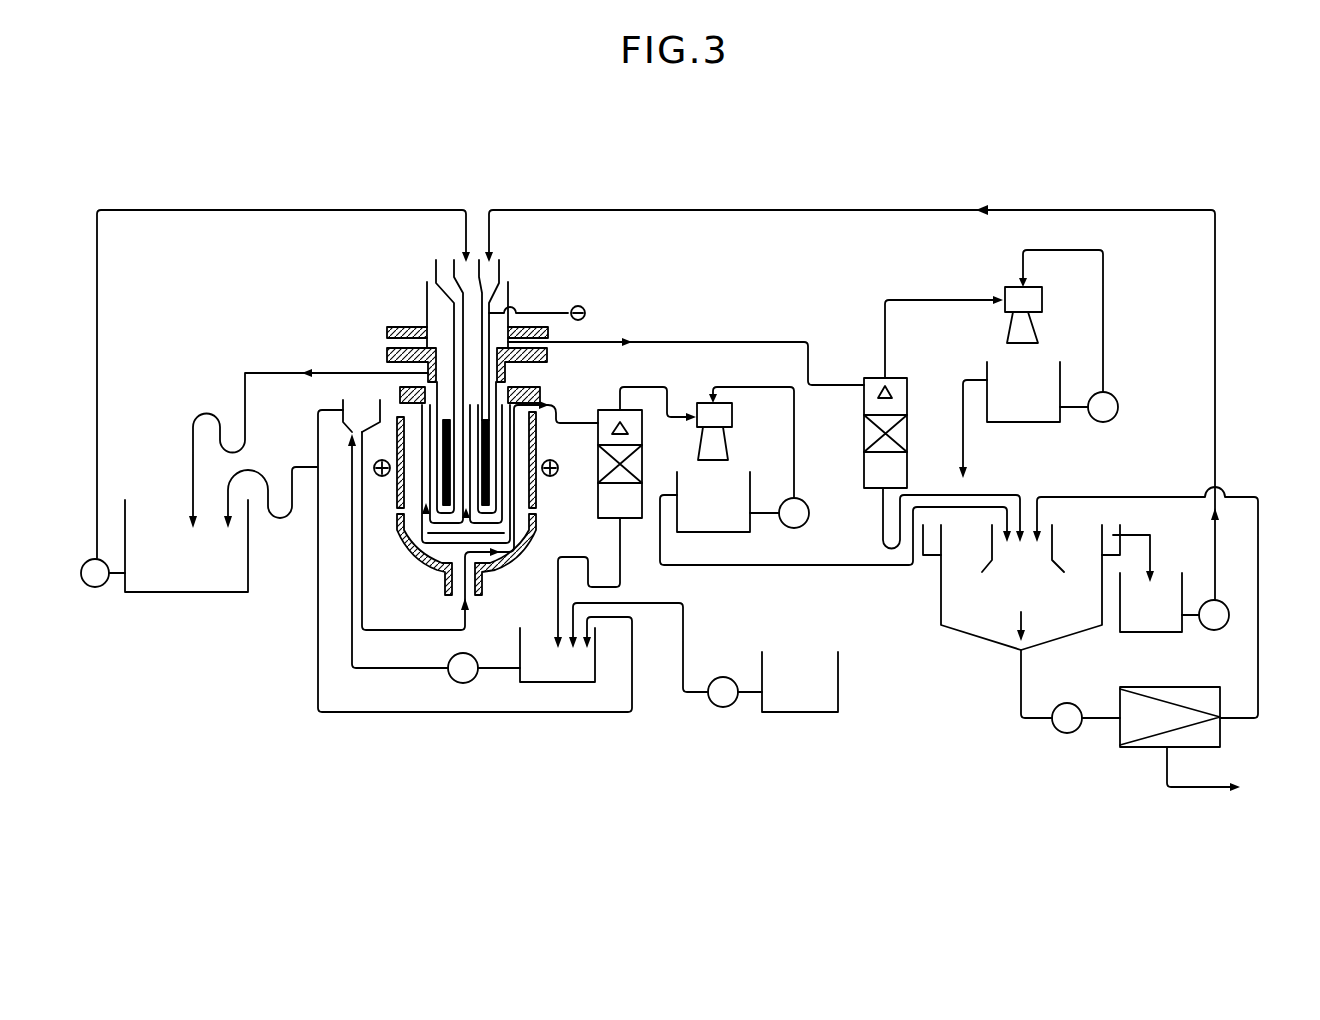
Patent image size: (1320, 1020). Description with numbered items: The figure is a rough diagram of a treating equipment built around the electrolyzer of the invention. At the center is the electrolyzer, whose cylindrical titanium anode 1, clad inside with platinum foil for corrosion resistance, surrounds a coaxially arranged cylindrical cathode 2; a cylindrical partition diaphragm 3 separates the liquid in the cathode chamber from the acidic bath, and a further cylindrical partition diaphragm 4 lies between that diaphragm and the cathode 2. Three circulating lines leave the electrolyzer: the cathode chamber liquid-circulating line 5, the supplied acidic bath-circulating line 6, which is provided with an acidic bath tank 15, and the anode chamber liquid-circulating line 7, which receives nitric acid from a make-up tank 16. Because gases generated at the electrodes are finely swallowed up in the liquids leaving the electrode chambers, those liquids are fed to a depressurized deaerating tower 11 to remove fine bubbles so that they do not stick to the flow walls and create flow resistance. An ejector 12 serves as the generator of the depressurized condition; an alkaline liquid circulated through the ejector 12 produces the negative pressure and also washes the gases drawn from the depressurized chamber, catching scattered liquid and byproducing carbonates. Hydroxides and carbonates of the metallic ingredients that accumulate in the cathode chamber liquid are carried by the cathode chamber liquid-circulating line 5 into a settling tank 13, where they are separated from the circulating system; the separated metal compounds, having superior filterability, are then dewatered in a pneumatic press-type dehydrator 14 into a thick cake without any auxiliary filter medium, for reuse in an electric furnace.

The anode 1 is at (569, 468).
The cathode 2 is at (442, 442).
The partition diaphragm 3 is at (420, 482).
The partition diaphragm 4 is at (420, 532).
The cathode chamber liquid-circulating line 5 is at (935, 210).
The supplied acidic bath-circulating line 6 is at (250, 210).
The anode chamber liquid-circulating line 7 is at (388, 712).
The depressurized deaerating tower 11 is at (633, 412).
The ejector 12 is at (720, 443).
The settling tank 13 is at (940, 605).
The pneumatic press-type dehydrator 14 is at (1118, 734).
The acidic bath tank 15 is at (180, 592).
The make-up tank 16 is at (800, 712).